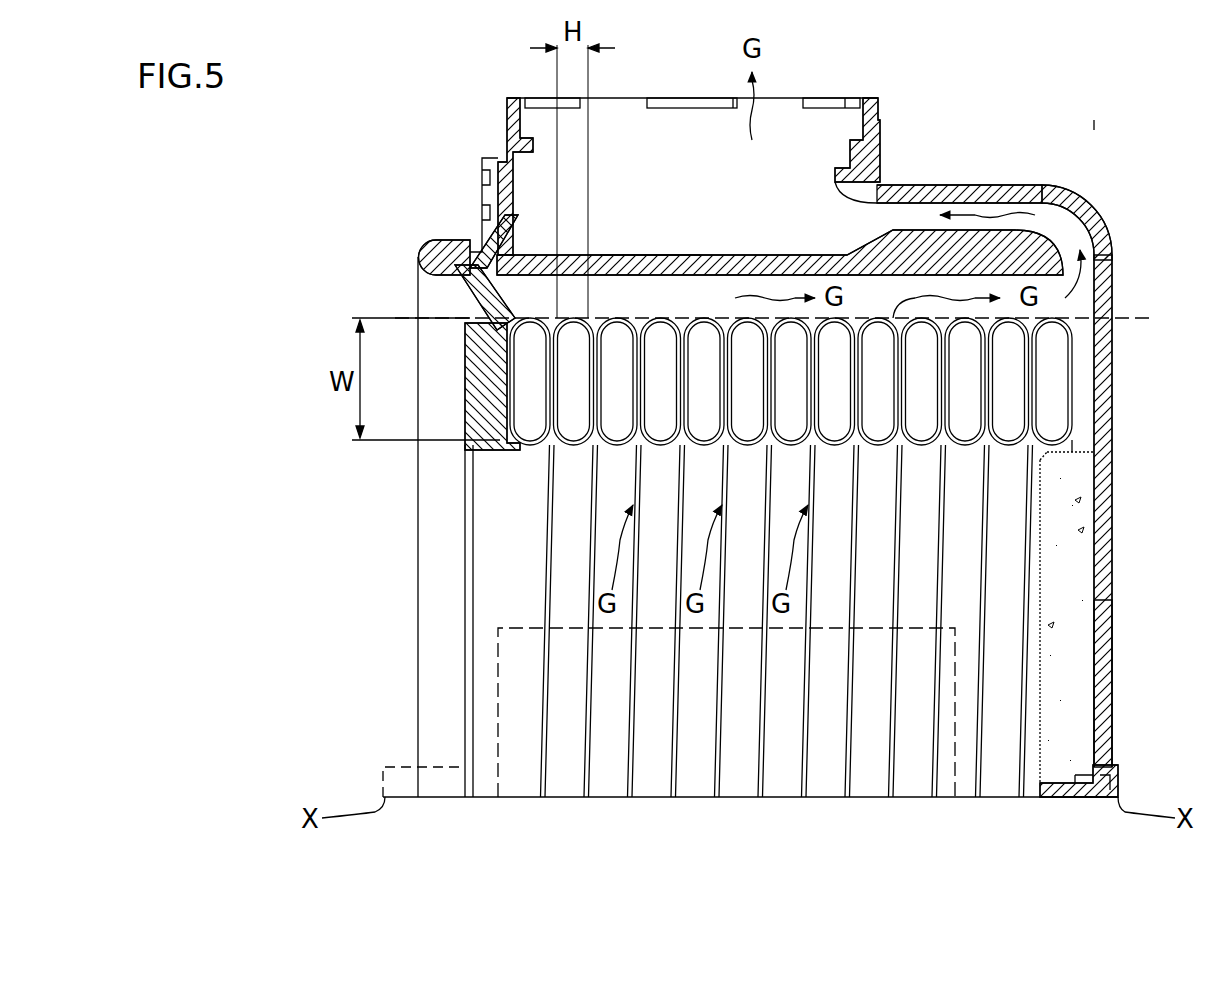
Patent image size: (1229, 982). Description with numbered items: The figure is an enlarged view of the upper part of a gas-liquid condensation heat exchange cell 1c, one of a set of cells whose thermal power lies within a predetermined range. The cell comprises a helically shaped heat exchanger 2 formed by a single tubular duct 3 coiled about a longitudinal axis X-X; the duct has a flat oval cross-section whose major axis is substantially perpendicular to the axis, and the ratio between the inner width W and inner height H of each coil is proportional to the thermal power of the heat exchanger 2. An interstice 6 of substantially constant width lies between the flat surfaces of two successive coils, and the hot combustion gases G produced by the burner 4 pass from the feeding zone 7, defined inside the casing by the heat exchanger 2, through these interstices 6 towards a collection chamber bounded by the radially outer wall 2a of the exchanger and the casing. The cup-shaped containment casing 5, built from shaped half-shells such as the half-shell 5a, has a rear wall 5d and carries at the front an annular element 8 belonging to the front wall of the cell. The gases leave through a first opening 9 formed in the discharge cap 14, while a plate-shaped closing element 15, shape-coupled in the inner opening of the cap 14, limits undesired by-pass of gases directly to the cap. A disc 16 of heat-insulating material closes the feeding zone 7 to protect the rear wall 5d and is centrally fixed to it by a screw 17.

The heat exchange cell 1c is at (1112, 135).
The heat exchanger 2 is at (706, 303).
The radially outer wall 2a is at (652, 310).
The tubular duct 3 is at (537, 430).
The burner 4 is at (495, 655).
The containment casing 5 is at (1118, 404).
The half-shell 5a is at (1100, 238).
The rear wall 5d is at (1106, 665).
The interstice 6 is at (548, 316).
The feeding zone 7 is at (452, 571).
The annular element 8 is at (438, 722).
The first opening 9 is at (535, 97).
The discharge cap 14 is at (962, 197).
The closing element 15 is at (780, 262).
The disc 16 is at (1063, 567).
The screw 17 is at (1070, 786).